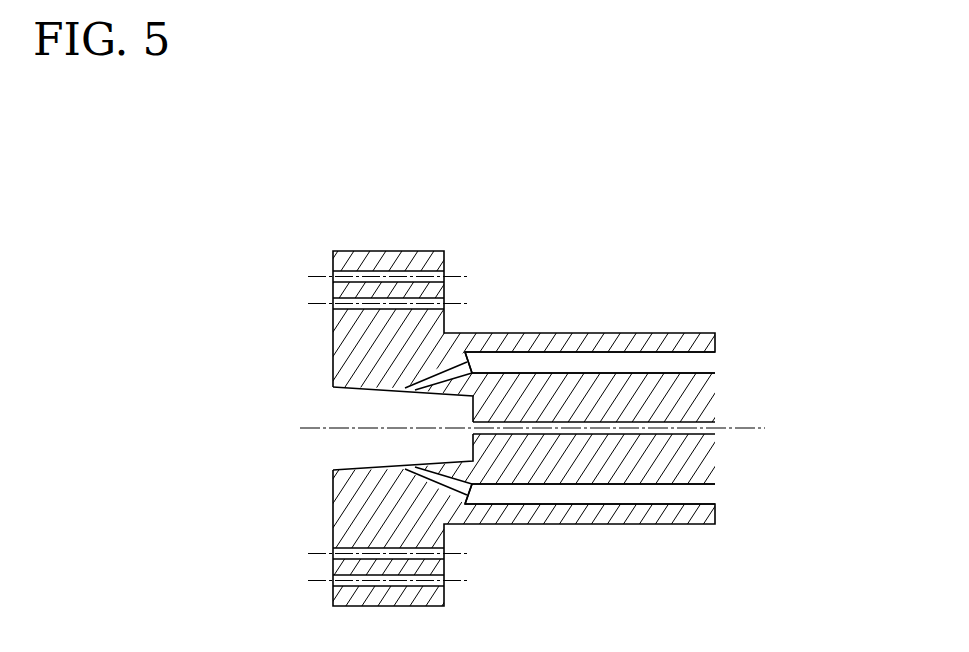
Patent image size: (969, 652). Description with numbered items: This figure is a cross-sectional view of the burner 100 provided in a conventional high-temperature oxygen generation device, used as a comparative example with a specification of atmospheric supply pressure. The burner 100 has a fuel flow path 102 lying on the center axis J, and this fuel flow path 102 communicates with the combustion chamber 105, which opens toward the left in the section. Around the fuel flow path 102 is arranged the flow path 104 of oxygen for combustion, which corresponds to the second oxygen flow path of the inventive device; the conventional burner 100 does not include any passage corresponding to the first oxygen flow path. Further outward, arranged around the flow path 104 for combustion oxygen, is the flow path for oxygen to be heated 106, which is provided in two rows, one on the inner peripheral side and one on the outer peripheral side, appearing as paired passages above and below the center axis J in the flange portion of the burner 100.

The burner 100 is at (336, 211).
The fuel flow path 102 is at (697, 435).
The flow path of oxygen for combustion 104 is at (474, 366).
The combustion chamber 105 is at (367, 469).
The flow path for oxygen to be heated 106 is at (437, 269).
The center axis J is at (745, 430).